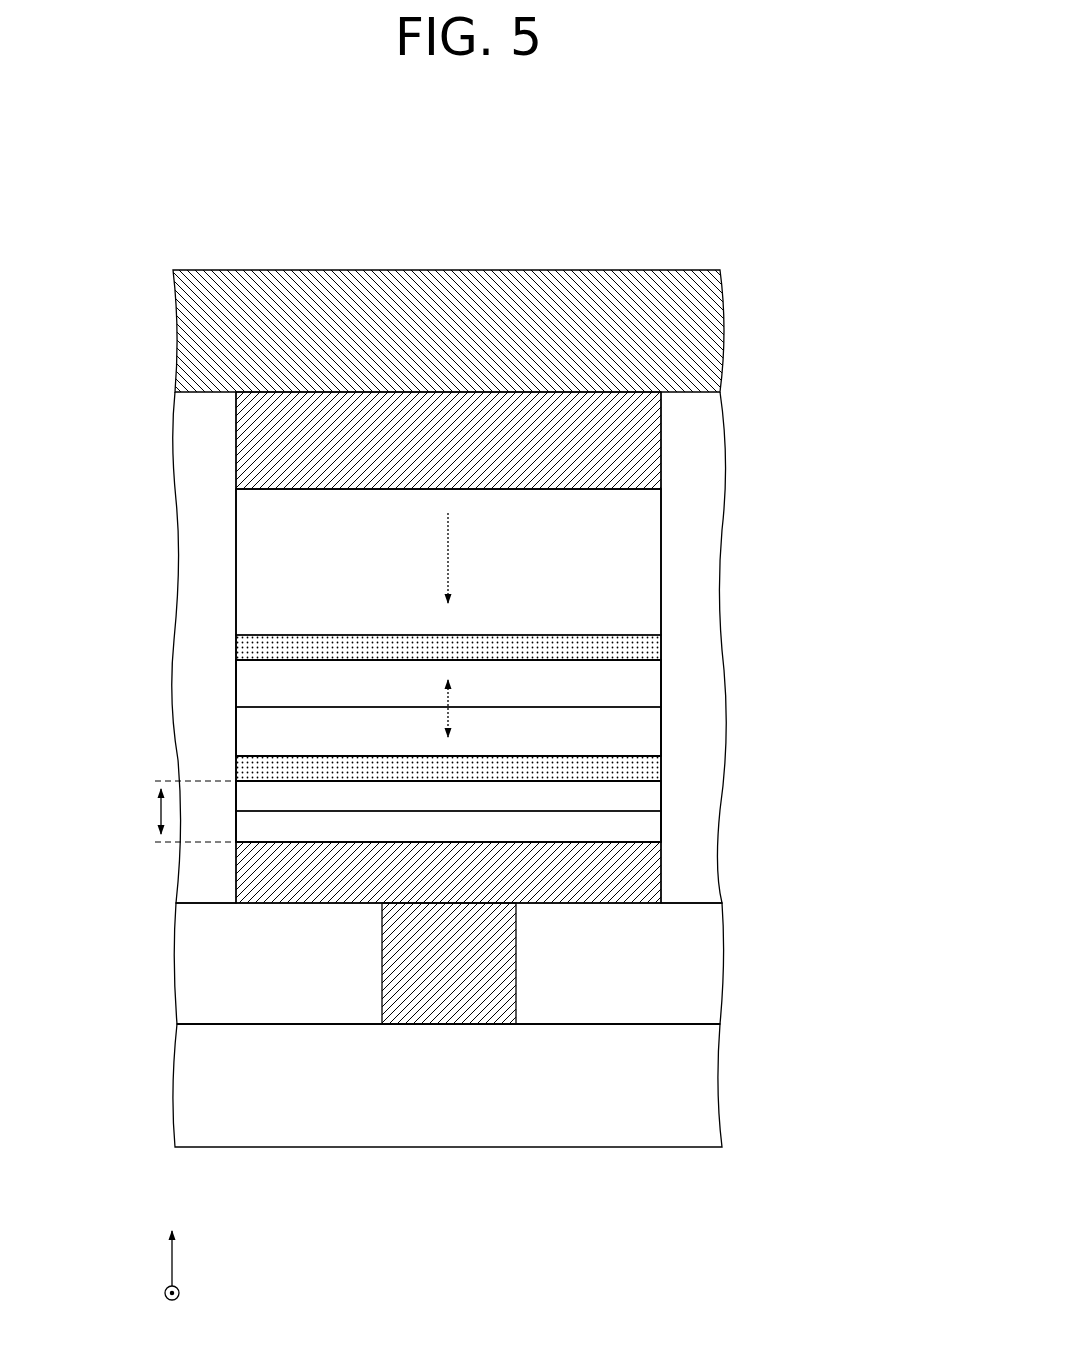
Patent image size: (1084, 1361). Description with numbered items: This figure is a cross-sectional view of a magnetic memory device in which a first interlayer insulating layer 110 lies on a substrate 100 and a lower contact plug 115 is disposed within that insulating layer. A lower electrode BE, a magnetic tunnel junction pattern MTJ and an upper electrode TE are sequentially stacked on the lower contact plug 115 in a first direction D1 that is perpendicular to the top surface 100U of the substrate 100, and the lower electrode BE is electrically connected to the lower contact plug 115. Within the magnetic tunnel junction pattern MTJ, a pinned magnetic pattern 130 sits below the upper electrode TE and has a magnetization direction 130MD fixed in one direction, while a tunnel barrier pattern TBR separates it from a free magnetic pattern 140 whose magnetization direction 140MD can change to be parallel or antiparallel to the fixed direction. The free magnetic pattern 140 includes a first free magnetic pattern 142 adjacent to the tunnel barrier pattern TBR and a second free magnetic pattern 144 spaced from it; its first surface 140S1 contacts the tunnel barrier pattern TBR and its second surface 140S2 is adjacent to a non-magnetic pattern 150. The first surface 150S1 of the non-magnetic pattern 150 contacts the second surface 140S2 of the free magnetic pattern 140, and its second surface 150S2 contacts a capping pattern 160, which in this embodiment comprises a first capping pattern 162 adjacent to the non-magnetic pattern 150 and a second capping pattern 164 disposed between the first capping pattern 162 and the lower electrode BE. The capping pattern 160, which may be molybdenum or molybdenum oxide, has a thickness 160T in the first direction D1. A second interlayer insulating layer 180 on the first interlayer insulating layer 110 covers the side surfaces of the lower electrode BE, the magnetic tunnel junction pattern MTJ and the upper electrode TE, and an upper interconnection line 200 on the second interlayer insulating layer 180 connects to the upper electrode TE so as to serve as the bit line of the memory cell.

The upper interconnection line 200 is at (710, 327).
The second interlayer insulating layer 180 is at (710, 404).
The upper electrode TE is at (650, 443).
The pinned magnetic pattern 130 is at (648, 553).
The magnetization direction of the pinned magnetic pattern 130MD is at (448, 562).
The tunnel barrier pattern TBR is at (660, 644).
The first surface of the free magnetic pattern 140S1 is at (306, 652).
The free magnetic pattern 140 is at (815, 672).
The first free magnetic pattern 142 is at (650, 681).
The second free magnetic pattern 144 is at (650, 729).
The magnetization direction of the free magnetic pattern 140MD is at (448, 690).
The non-magnetic pattern 150 is at (650, 767).
The second surface of the free magnetic pattern 140S2 is at (298, 762).
The first surface of the non-magnetic pattern 150S1 is at (359, 771).
The thickness of the capping pattern 160T is at (168, 811).
The capping pattern 160 is at (815, 787).
The first capping pattern 162 is at (650, 797).
The second capping pattern 164 is at (650, 832).
The second surface of the non-magnetic pattern 150S2 is at (317, 790).
The lower electrode BE is at (650, 866).
The magnetic tunnel junction pattern MTJ is at (878, 540).
The first interlayer insulating layer 110 is at (710, 932).
The lower contact plug 115 is at (505, 972).
The substrate 100 is at (710, 1082).
The top surface of the substrate 100U is at (228, 1024).
The first direction D1 is at (173, 1248).